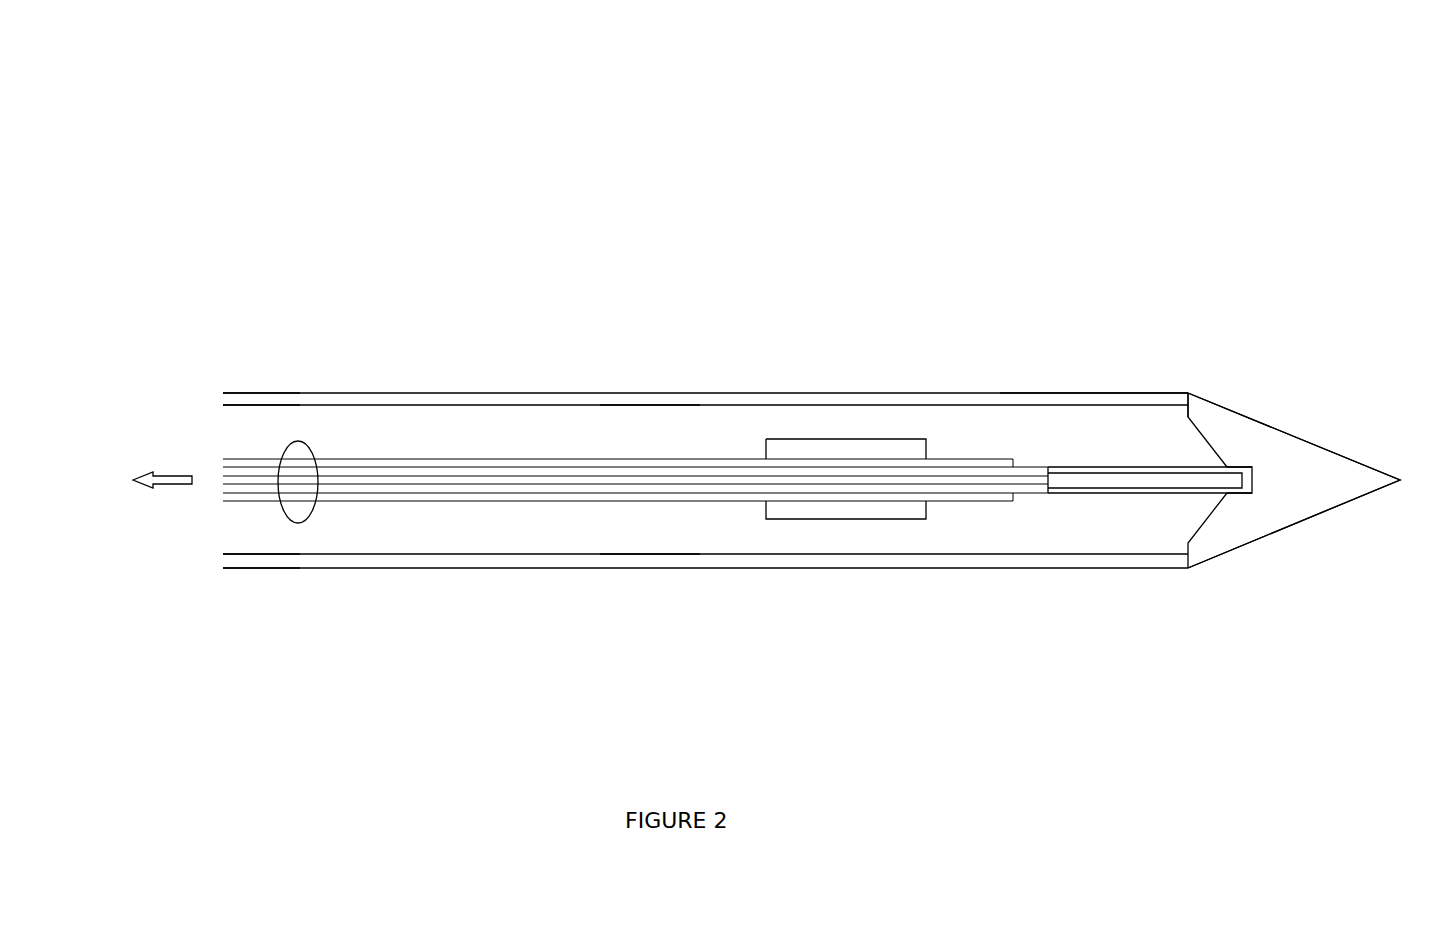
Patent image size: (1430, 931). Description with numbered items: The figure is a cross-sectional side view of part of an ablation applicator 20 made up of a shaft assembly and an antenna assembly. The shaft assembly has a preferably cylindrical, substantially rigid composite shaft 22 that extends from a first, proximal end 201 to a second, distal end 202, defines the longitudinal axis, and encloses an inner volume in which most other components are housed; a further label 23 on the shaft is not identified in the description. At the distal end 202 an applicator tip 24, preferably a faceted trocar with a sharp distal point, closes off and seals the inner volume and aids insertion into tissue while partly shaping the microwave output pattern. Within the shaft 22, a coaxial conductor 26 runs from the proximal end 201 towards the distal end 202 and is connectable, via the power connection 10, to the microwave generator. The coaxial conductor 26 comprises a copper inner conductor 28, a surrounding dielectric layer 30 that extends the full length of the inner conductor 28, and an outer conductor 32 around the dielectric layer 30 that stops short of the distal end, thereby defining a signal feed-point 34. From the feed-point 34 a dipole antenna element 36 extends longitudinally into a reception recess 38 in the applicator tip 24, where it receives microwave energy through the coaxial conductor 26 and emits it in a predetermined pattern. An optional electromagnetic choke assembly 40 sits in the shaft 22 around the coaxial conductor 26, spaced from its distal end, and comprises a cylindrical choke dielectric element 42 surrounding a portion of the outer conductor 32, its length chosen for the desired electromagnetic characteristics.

The ablation applicator 20 is at (167, 120).
The first (proximal) end 201 is at (260, 312).
The second (distal) end 202 is at (1277, 318).
The shaft 22 is at (929, 560).
The outer tube wall 23 is at (1138, 393).
The applicator tip 24 is at (1342, 480).
The coaxial conductor 26 is at (297, 523).
The inner conductor 28 is at (530, 480).
The dielectric layer 30 is at (519, 493).
The outer conductor 32 is at (503, 497).
The signal feed-point 34 is at (1048, 467).
The dipole antenna element 36 is at (1166, 480).
The reception recess 38 is at (1255, 495).
The electromagnetic choke assembly 40 is at (800, 527).
The choke dielectric element 42 is at (637, 430).
The power connection 10 is at (124, 482).